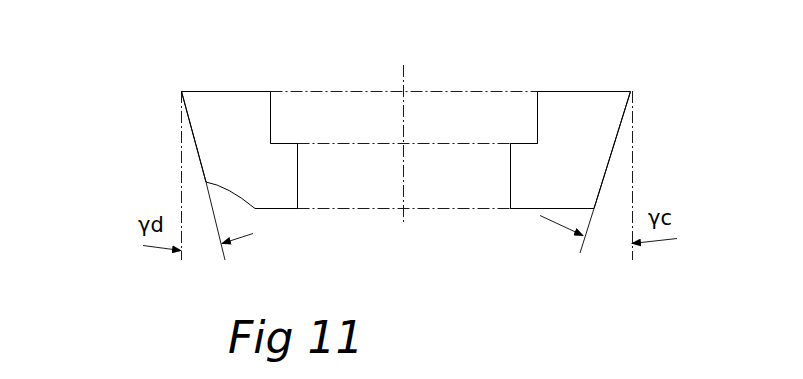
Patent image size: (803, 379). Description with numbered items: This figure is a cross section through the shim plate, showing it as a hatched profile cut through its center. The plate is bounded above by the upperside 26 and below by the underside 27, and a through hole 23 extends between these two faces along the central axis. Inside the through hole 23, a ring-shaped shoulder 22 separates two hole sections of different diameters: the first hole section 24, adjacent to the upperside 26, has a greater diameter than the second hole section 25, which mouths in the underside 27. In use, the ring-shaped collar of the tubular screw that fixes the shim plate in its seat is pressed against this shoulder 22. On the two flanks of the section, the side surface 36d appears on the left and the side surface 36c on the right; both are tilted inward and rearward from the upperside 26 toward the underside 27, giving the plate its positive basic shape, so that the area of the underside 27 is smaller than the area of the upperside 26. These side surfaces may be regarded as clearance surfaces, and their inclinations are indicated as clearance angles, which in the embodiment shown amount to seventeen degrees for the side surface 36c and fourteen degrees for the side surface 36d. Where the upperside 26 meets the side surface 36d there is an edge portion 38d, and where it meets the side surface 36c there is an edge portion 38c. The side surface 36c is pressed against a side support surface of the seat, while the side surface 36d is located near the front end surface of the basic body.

The ring-shaped shoulder 22 is at (520, 142).
The through hole 23 is at (435, 185).
The first hole section 24 is at (270, 117).
The second hole section 25 is at (297, 177).
The upperside 26 is at (592, 88).
The underside 27 is at (518, 208).
The side surface 36c is at (608, 158).
The side surface 36d is at (197, 148).
The edge portion 38c is at (620, 95).
The edge portion 38d is at (190, 100).